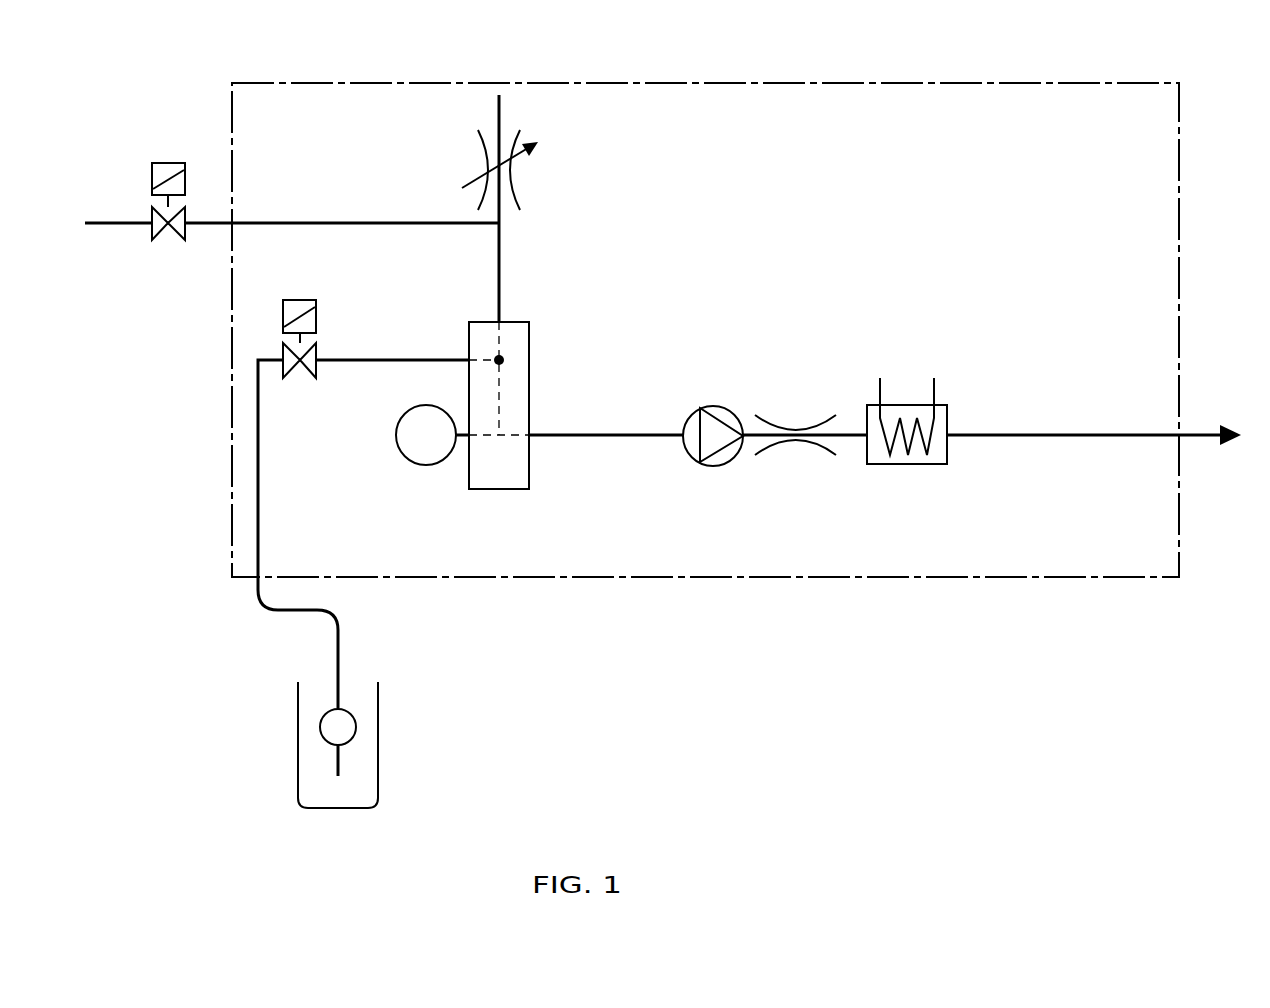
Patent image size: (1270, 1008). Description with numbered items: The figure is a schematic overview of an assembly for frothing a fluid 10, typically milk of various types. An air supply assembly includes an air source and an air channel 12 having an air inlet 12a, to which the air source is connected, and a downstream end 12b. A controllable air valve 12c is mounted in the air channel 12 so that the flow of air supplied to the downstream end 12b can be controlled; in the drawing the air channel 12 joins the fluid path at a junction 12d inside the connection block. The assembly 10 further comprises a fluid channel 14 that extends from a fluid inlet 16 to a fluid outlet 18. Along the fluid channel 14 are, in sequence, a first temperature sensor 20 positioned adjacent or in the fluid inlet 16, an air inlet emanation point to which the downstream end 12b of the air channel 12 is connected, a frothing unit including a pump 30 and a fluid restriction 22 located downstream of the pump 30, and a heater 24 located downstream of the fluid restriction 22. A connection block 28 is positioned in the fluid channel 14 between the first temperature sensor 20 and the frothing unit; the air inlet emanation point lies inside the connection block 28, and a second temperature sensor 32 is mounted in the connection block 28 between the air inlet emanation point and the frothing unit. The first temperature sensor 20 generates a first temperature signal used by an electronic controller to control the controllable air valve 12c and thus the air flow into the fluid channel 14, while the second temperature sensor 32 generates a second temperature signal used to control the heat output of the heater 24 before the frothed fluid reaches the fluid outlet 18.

The assembly for frothing a fluid 10 is at (218, 94).
The air channel 12 is at (503, 237).
The air inlet 12a is at (499, 95).
The downstream end 12b is at (503, 312).
The controllable air valve 12c is at (510, 192).
The junction point 12d is at (507, 362).
The fluid channel 14 is at (259, 488).
The fluid inlet 16 is at (337, 778).
The fluid outlet 18 is at (1240, 431).
The first temperature sensor 20 is at (320, 727).
The fluid restriction 22 is at (797, 430).
The heater 24 is at (905, 464).
The connection block 28 is at (499, 489).
The pump 30 is at (716, 406).
The second temperature sensor 32 is at (395, 435).